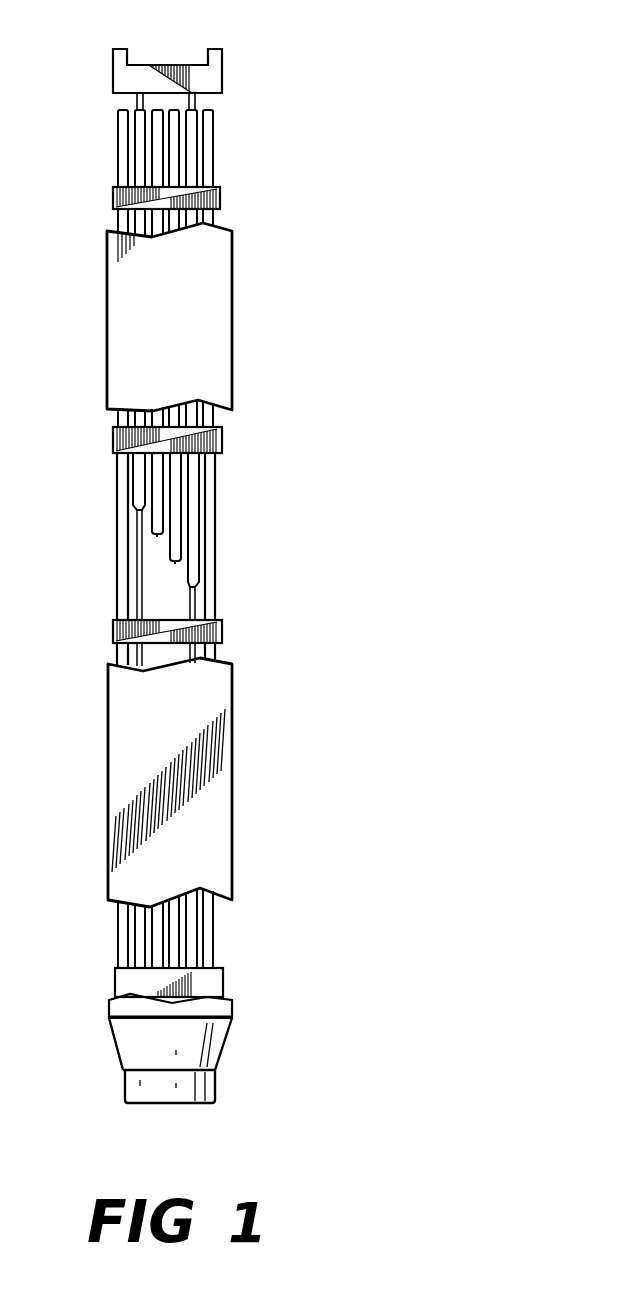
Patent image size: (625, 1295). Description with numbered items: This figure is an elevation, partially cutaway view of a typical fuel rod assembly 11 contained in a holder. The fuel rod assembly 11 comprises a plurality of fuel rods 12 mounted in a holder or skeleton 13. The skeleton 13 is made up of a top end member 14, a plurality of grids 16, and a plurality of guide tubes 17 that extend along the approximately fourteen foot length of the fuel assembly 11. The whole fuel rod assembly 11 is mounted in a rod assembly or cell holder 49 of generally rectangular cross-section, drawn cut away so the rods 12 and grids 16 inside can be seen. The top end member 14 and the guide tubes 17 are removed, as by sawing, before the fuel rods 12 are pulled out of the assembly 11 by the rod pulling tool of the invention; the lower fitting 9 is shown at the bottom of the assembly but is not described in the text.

The bottom collar / ferrule 9 is at (217, 978).
The fuel rod assembly 11 is at (138, 157).
The fuel rods 12 is at (137, 480).
The holder or skeleton 13 is at (222, 637).
The top end member 14 is at (213, 68).
The grids 16 is at (113, 632).
The guide tubes 17 is at (137, 102).
The rod assembly or cell holder 49 is at (210, 820).